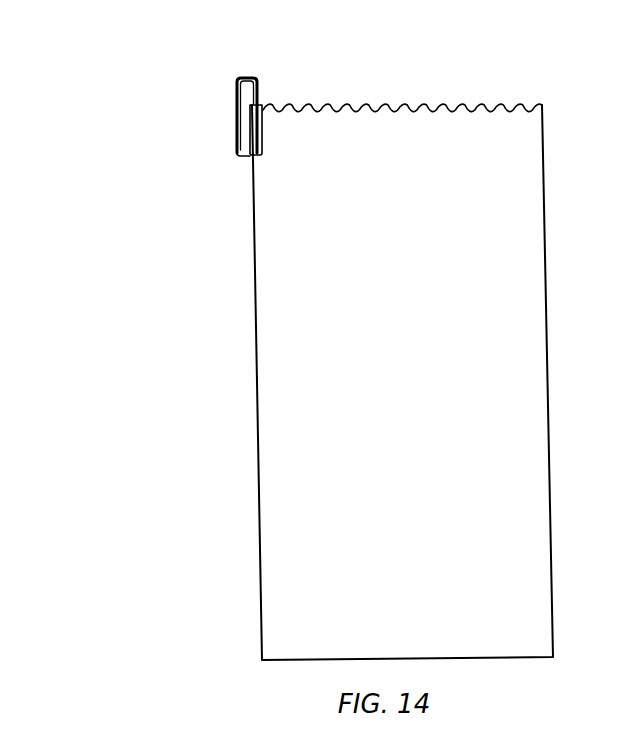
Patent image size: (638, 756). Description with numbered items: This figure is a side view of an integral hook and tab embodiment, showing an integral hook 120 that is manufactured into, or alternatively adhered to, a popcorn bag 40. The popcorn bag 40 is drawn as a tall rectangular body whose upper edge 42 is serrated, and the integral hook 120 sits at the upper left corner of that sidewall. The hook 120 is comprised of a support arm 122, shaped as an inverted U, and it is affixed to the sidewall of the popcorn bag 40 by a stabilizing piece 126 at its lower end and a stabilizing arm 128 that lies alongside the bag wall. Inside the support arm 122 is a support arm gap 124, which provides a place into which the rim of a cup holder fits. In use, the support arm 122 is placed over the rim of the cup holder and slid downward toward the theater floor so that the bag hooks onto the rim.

The integral hook 120 is at (82, 64).
The popcorn bag 40 is at (535, 190).
The serrated top edge of bag 42 is at (498, 105).
The support arm 122 is at (233, 88).
The support arm gap 124 is at (242, 100).
The stabilizing piece 126 is at (248, 150).
The stabilizing arm 128 is at (260, 100).